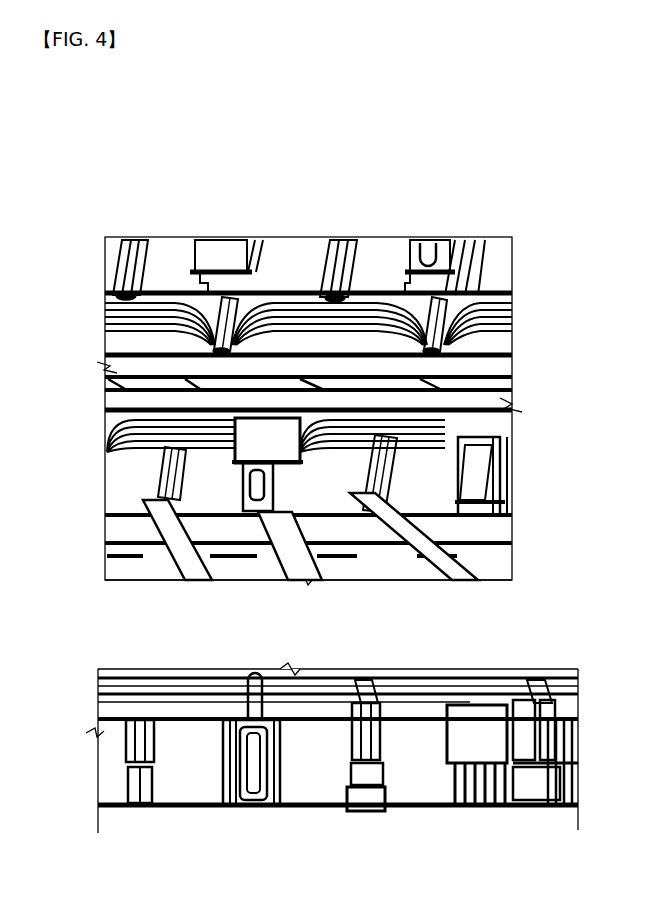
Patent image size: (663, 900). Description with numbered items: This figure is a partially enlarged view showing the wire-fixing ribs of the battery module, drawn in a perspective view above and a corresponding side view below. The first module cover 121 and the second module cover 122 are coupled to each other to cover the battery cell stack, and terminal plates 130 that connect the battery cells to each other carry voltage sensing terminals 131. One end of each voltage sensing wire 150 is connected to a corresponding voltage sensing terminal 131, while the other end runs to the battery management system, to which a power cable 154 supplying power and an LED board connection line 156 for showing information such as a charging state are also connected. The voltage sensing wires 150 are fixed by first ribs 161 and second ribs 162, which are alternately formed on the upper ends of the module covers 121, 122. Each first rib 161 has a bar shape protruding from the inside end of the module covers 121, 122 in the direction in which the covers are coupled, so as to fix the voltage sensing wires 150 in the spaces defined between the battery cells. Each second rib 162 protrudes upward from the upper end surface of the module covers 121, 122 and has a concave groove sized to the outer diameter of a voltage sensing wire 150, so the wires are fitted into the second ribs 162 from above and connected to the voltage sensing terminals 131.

The first module cover 121 is at (307, 639).
The second module cover 122 is at (308, 214).
The terminal plate 130 is at (333, 597).
The voltage sensing terminal 131 is at (249, 516).
The voltage sensing wire 150 is at (318, 502).
The power cable 154 is at (353, 409).
The LED board connection line 156 is at (344, 348).
The first rib 161 is at (382, 446).
The second rib 162 is at (227, 843).